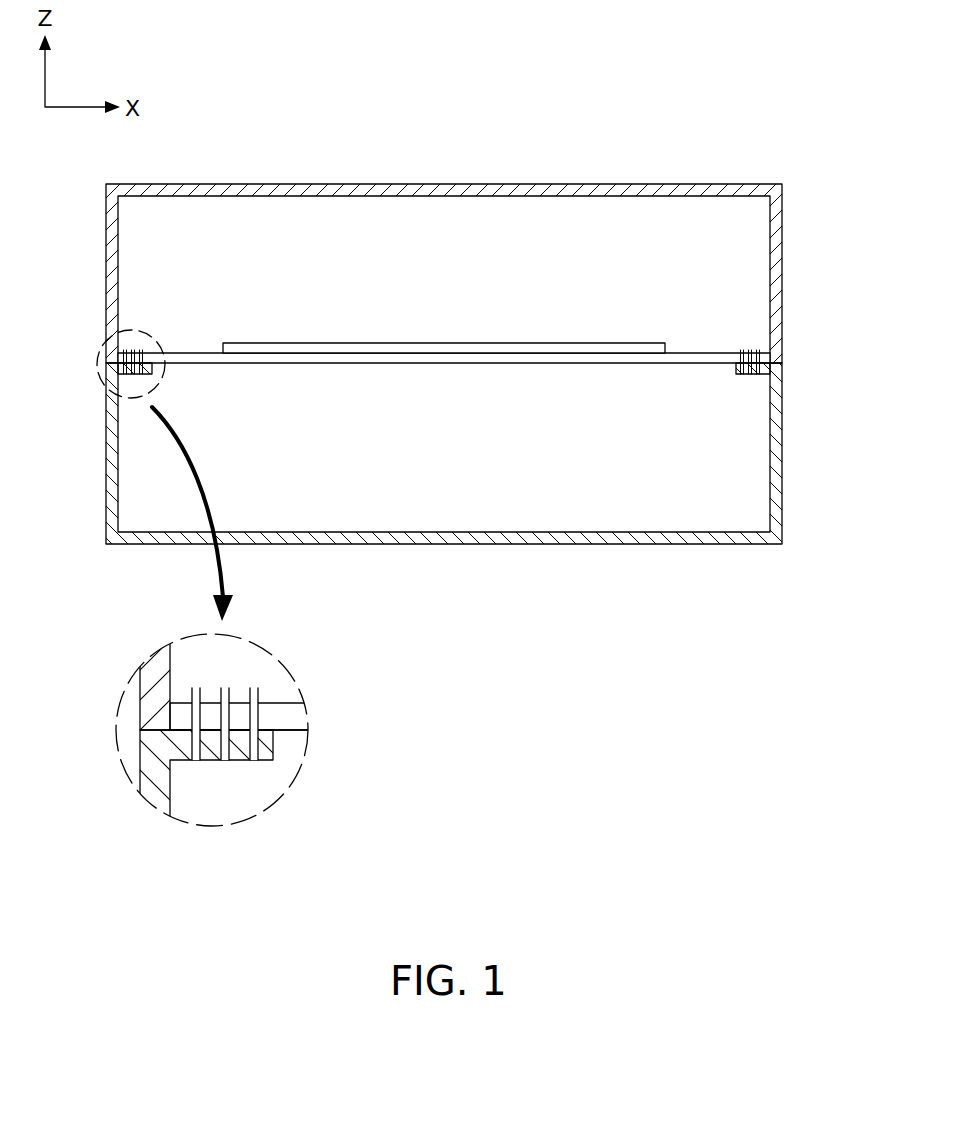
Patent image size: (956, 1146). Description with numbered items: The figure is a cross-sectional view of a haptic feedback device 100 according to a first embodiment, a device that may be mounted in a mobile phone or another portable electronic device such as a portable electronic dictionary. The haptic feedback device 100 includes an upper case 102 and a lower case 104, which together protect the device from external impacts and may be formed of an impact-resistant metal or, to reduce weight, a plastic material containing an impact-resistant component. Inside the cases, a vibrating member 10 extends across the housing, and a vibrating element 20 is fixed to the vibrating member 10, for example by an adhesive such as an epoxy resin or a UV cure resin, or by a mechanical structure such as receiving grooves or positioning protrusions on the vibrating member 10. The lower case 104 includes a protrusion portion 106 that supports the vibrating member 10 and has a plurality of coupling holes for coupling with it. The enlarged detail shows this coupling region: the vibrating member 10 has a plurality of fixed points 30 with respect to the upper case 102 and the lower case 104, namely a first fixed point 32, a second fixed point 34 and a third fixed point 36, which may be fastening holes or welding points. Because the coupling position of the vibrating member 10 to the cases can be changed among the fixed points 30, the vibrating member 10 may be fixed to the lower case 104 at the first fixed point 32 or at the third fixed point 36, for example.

The haptic feedback device 100 is at (662, 158).
The upper case 102 is at (783, 277).
The lower case 104 is at (783, 467).
The protrusion portion 106 is at (178, 746).
The vibrating member 10 is at (385, 362).
The vibrating element 20 is at (508, 348).
The fixed points 30 is at (172, 887).
The first fixed point 32 is at (254, 690).
The second fixed point 34 is at (225, 690).
The third fixed point 36 is at (196, 690).